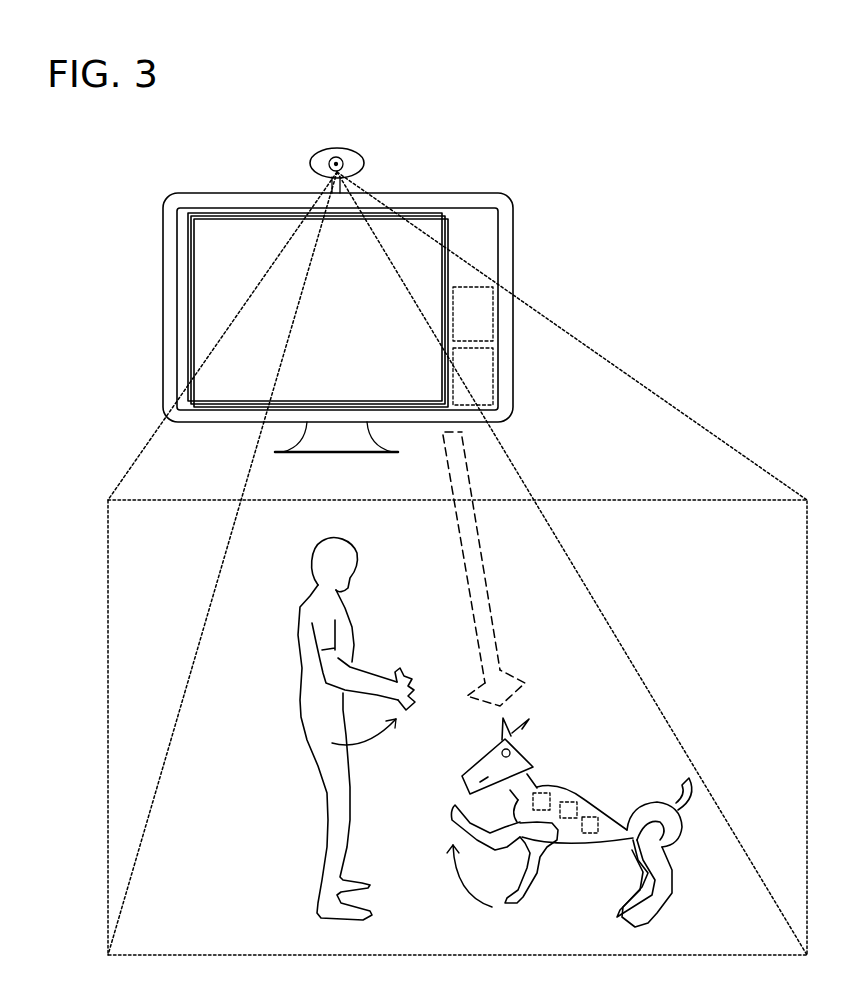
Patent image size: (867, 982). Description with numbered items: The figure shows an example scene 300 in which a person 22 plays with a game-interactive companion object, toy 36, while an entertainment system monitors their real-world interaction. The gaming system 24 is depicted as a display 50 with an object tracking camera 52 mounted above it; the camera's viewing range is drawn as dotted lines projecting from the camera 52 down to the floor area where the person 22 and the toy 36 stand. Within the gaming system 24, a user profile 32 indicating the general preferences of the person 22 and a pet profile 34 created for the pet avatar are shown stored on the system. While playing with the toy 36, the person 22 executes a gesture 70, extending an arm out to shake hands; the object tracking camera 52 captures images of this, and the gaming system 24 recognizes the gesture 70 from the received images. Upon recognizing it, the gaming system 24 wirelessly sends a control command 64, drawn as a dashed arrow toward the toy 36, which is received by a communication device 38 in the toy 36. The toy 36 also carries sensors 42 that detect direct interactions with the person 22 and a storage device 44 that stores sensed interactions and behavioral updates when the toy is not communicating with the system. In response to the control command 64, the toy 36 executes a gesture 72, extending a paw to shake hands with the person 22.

The scene 300 is at (708, 57).
The gaming system 24 is at (176, 158).
The display 50 is at (452, 193).
The object tracking camera 52 is at (355, 148).
The user profile 32 is at (484, 328).
The pet profile 34 is at (484, 391).
The person 22 is at (310, 597).
The gesture 70 is at (375, 743).
The control command 64 is at (490, 593).
The toy 36 is at (548, 786).
The storage device 44 is at (541, 790).
The communication device 38 is at (578, 800).
The sensors 42 is at (590, 836).
The gesture 72 is at (455, 897).